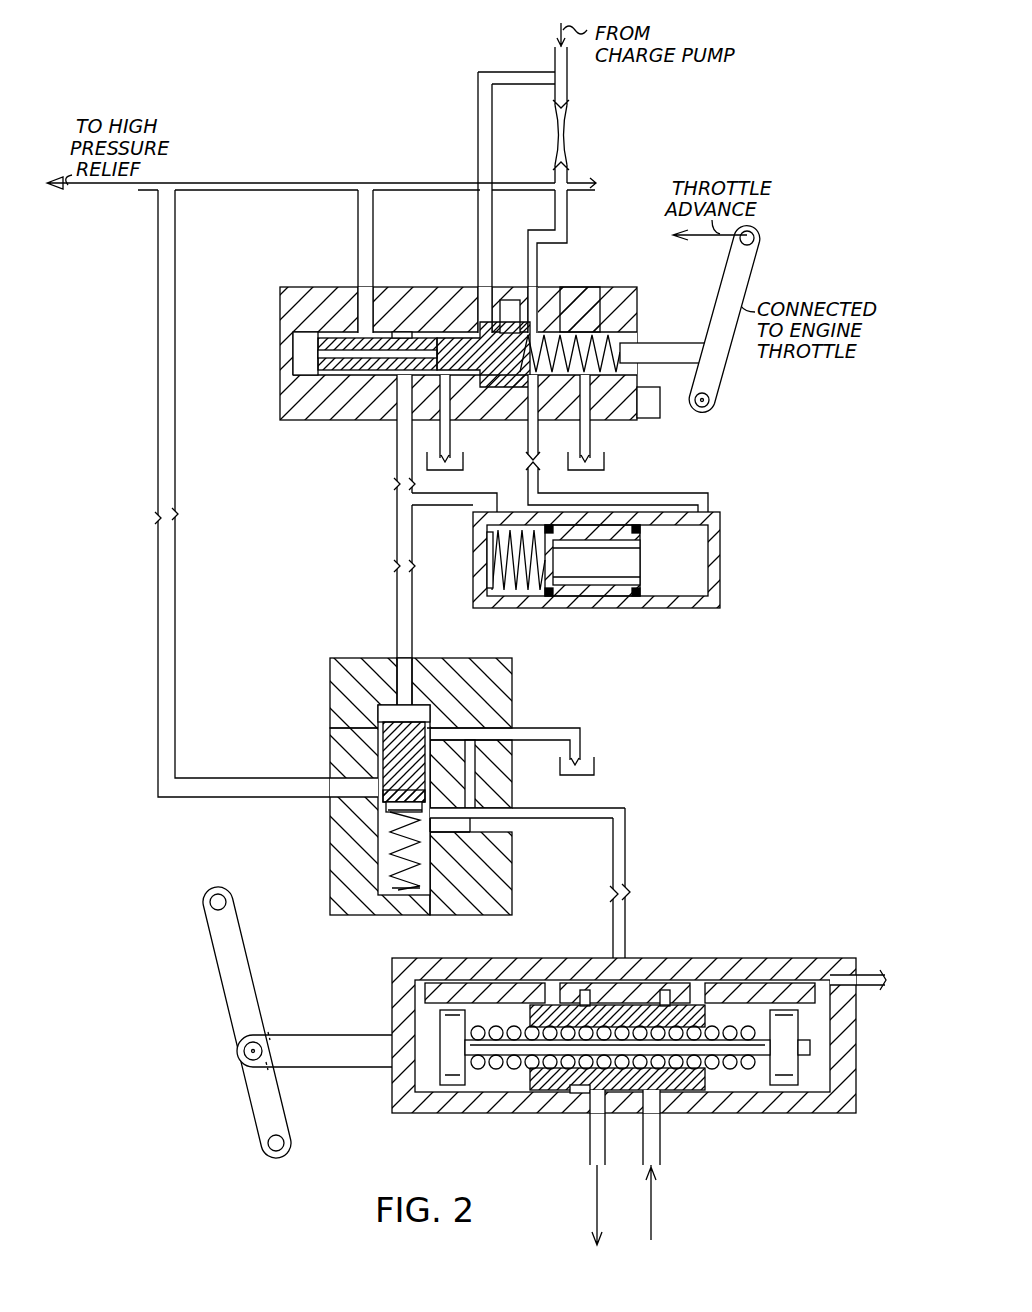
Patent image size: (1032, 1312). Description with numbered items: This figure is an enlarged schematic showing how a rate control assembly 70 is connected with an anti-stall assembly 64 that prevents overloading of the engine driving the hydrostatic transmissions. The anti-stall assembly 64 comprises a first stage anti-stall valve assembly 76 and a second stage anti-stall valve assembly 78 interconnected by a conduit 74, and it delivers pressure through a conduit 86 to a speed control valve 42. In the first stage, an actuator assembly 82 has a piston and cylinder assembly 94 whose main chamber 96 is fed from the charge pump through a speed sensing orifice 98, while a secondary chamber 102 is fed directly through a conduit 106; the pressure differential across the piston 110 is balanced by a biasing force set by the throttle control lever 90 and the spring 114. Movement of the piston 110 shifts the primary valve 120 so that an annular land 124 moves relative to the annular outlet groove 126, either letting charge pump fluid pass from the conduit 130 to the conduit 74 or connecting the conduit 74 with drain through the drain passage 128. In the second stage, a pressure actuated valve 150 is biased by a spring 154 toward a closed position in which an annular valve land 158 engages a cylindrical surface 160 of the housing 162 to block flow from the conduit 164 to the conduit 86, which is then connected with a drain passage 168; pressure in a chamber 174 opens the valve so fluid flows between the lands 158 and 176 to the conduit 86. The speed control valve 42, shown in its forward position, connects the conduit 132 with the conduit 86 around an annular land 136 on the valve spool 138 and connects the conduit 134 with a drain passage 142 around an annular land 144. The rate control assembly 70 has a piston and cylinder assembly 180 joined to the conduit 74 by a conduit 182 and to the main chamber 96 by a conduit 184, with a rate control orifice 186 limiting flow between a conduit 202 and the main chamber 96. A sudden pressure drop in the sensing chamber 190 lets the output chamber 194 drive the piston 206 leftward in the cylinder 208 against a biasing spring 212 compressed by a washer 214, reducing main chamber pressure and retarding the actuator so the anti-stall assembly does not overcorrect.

The speed control valve 42 is at (186, 989).
The anti-stall assembly 64 is at (112, 570).
The rate control assembly 70 is at (752, 568).
The conduit 74 is at (398, 568).
The first stage anti-stall valve assembly 76 is at (308, 448).
The second stage anti-stall valve assembly 78 is at (312, 698).
The actuator assembly 82 is at (586, 288).
The conduit 86 is at (626, 894).
The throttle control lever 90 is at (730, 264).
The piston and cylinder assembly 94 is at (463, 452).
The main chamber 96 is at (537, 432).
The speed sensing orifice 98 is at (582, 142).
The secondary chamber 102 is at (500, 402).
The conduit 106 is at (480, 146).
The piston 110 is at (502, 288).
The spring 114 is at (616, 330).
The primary valve 120 is at (292, 350).
The annular land 124 is at (392, 384).
The annular outlet groove 126 is at (412, 328).
The drain passage 128 is at (414, 460).
The conduit 130 is at (361, 222).
The conduit 132 is at (592, 1162).
The conduit 134 is at (662, 1160).
The annular land 136 is at (562, 1098).
The valve spool 138 is at (564, 968).
The drain passage 142 is at (770, 970).
The annular land 144 is at (670, 972).
The pressure actuated valve 150 is at (378, 746).
The spring 154 is at (394, 872).
The annular valve land 158 is at (376, 836).
The cylindrical surface 160 is at (384, 800).
The housing 162 is at (490, 688).
The conduit 164 is at (180, 518).
The drain passage 168 is at (456, 836).
The chamber 174 is at (394, 662).
The land 176 is at (460, 776).
The piston and cylinder assembly 180 is at (738, 522).
The conduit 182 is at (436, 500).
The conduit 184 is at (618, 492).
The rate control orifice 186 is at (539, 272).
The sensing chamber 190 is at (506, 596).
The output chamber 194 is at (672, 582).
The conduit 202 is at (548, 226).
The piston 206 is at (620, 558).
The cylinder 208 is at (580, 608).
The biasing spring 212 is at (492, 560).
The washer 214 is at (541, 608).